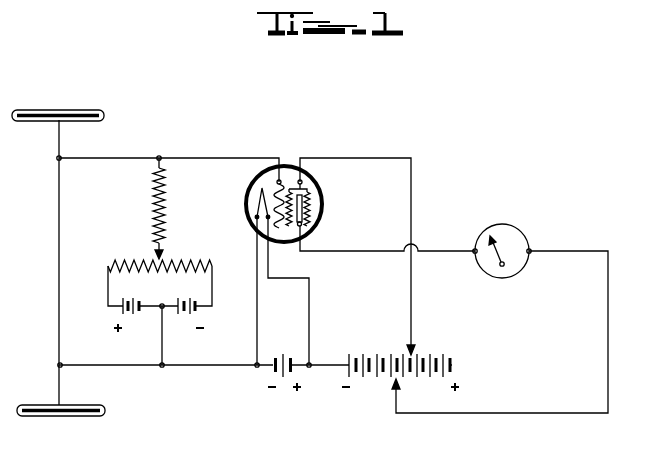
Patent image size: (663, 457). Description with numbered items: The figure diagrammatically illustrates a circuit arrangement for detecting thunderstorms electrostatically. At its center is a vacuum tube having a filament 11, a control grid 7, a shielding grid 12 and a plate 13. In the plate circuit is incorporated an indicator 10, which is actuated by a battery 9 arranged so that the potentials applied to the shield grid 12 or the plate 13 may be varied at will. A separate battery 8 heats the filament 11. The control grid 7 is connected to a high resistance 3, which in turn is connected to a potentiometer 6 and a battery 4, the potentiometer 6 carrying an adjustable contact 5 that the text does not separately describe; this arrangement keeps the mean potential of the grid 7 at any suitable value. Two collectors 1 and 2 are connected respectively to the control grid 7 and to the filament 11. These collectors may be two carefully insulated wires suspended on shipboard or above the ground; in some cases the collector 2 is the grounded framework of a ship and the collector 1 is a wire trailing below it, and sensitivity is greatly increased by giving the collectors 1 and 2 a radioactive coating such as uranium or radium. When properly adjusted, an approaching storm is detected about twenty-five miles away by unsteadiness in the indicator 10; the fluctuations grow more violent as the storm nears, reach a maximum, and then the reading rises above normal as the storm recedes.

The collector 1 is at (38, 110).
The collector 2 is at (62, 417).
The high resistance 3 is at (149, 207).
The battery 4 is at (160, 299).
The sliding contact 5 is at (165, 258).
The potentiometer 6 is at (133, 253).
The control grid 7 is at (288, 180).
The battery 8 is at (267, 377).
The battery 9 is at (392, 376).
The indicator 10 is at (509, 235).
The filament 11 is at (252, 200).
The shielding grid 12 is at (306, 201).
The plate 13 is at (302, 180).